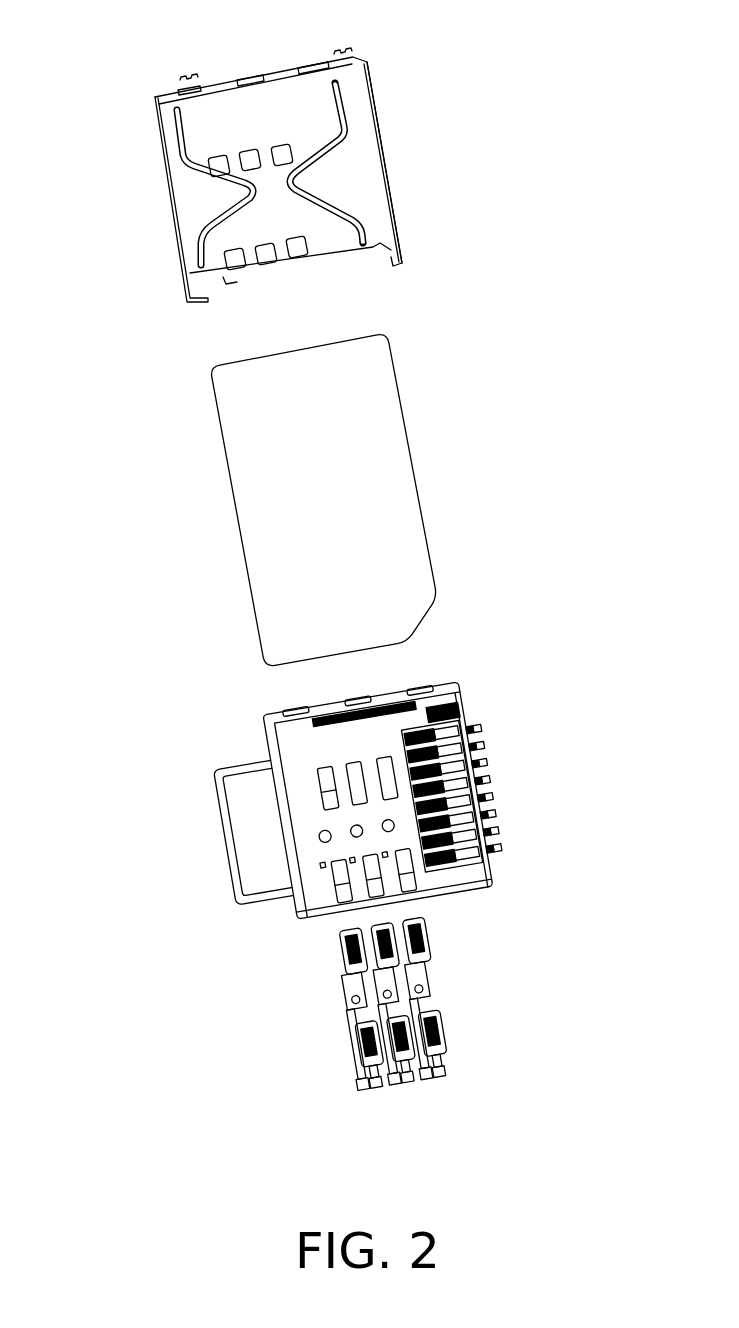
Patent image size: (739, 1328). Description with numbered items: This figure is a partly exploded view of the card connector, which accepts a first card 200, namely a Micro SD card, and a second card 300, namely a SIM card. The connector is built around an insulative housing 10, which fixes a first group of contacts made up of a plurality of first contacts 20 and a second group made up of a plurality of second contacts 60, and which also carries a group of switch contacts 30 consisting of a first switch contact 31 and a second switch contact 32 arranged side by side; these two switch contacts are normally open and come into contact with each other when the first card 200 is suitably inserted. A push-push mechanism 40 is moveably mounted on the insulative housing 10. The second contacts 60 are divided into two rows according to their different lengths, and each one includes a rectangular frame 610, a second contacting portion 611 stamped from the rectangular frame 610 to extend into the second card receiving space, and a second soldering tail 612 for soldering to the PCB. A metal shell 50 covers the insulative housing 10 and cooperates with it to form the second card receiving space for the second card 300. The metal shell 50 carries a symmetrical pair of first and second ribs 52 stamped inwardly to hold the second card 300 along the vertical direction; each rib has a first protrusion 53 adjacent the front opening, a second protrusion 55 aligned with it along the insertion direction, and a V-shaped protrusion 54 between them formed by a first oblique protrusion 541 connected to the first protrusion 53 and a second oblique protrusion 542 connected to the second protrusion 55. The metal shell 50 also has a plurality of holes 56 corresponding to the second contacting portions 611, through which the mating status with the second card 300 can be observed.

The insulative housing 10 is at (290, 748).
The first contacts 20 is at (480, 767).
The switch contacts 30 is at (542, 766).
The first switch contact 31 is at (477, 732).
The second switch contact 32 is at (547, 703).
The push-push mechanism 40 is at (462, 693).
The metal shell 50 is at (304, 154).
The first and second ribs 52 is at (173, 133).
The first protrusion 53 is at (362, 233).
The V-shaped protrusion 54 is at (344, 174).
The first oblique protrusion 541 is at (342, 193).
The second oblique protrusion 542 is at (330, 152).
The second protrusion 55 is at (343, 90).
The holes 56 is at (235, 257).
The second contacts 60 is at (423, 1010).
The rectangular frame 610 is at (350, 957).
The second contacting portion 611 is at (347, 933).
The second soldering tail 612 is at (362, 1085).
The first card 200 is at (252, 803).
The second card 300 is at (377, 430).